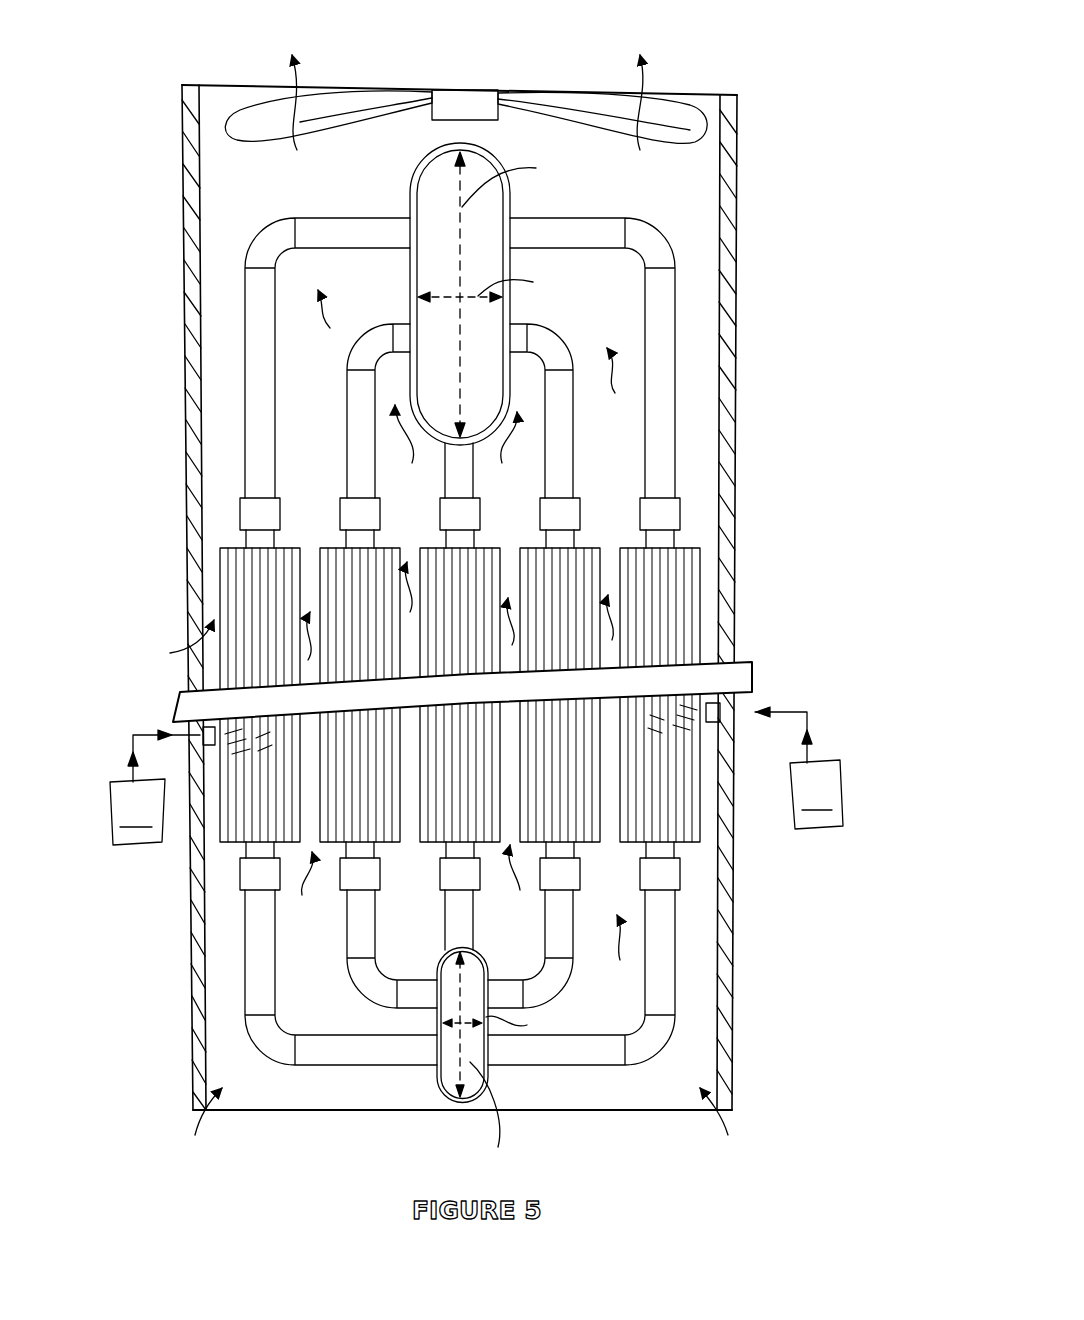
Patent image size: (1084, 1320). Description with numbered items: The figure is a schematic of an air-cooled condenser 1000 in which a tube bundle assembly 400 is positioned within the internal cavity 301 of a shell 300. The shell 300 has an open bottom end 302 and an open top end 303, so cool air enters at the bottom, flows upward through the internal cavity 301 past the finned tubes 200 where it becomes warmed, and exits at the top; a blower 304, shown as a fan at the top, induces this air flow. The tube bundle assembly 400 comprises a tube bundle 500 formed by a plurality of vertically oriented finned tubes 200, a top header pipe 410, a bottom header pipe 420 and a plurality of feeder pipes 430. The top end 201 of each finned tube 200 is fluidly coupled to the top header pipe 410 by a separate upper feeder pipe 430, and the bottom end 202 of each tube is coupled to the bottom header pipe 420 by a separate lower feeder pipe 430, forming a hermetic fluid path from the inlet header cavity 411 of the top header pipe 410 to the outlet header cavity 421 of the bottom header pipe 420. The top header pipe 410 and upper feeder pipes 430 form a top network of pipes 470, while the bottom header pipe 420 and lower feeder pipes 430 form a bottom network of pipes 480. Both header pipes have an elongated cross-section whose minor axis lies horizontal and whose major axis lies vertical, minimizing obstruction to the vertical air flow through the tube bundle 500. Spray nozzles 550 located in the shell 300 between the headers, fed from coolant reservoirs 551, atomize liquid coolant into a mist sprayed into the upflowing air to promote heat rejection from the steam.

The air-cooled condenser 1000 is at (818, 176).
The finned tubes 200 is at (248, 576).
The top end 201 is at (282, 547).
The bottom end 202 is at (227, 867).
The shell 300 is at (515, 610).
The internal cavity 301 is at (700, 432).
The open bottom end 302 is at (627, 1112).
The open top end 303 is at (703, 95).
The blower 304 is at (405, 93).
The tube bundle assembly 400 is at (243, 345).
The top header pipe 410 is at (474, 294).
The inlet header cavity 411 is at (487, 233).
The bottom header pipe 420 is at (483, 1059).
The outlet header cavity 421 is at (490, 1057).
The feeder pipes 430 is at (262, 240).
The top network of pipes 470 is at (243, 411).
The bottom network of pipes 480 is at (685, 953).
The tube bundle 500 is at (708, 585).
The spray nozzles 550 is at (212, 724).
The coolant reservoirs 551 is at (476, 776).